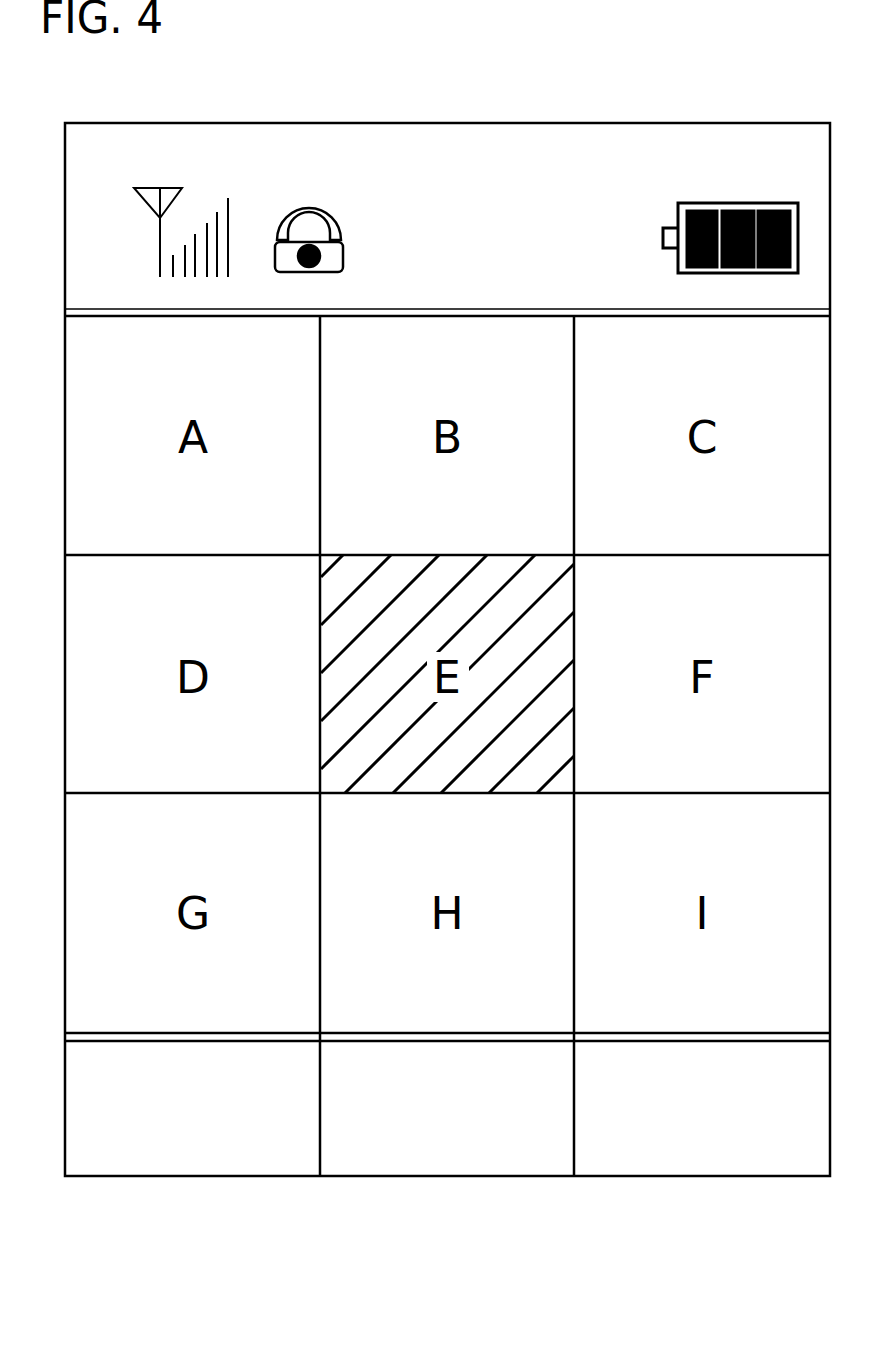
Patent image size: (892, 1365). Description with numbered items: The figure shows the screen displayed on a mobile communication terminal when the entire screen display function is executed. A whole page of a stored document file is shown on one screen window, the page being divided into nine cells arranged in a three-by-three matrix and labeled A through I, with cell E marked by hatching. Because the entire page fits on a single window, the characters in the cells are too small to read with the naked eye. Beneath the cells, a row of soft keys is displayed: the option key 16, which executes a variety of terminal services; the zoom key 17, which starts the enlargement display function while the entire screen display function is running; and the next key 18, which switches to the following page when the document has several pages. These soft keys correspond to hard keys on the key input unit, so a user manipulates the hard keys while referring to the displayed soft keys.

The option key 16 is at (193, 1150).
The zoom key 17 is at (442, 1152).
The next key 18 is at (705, 1152).